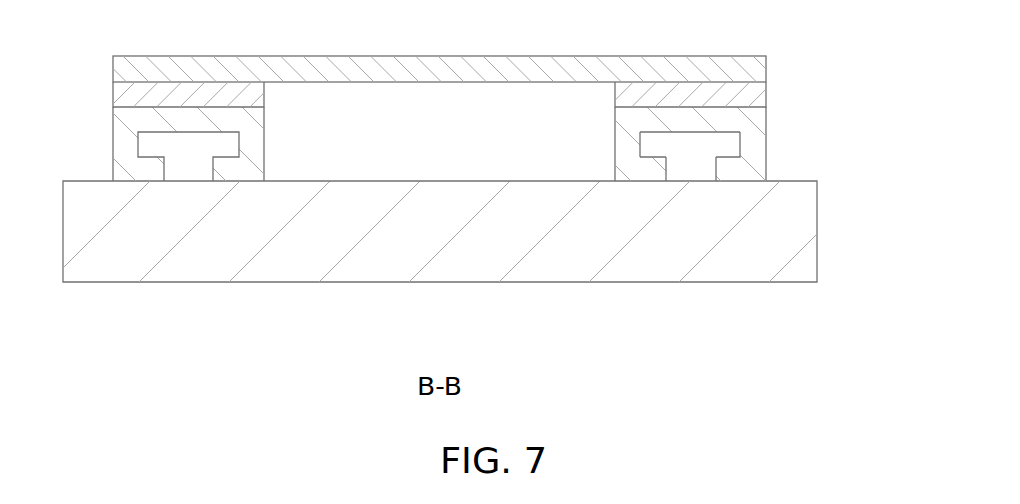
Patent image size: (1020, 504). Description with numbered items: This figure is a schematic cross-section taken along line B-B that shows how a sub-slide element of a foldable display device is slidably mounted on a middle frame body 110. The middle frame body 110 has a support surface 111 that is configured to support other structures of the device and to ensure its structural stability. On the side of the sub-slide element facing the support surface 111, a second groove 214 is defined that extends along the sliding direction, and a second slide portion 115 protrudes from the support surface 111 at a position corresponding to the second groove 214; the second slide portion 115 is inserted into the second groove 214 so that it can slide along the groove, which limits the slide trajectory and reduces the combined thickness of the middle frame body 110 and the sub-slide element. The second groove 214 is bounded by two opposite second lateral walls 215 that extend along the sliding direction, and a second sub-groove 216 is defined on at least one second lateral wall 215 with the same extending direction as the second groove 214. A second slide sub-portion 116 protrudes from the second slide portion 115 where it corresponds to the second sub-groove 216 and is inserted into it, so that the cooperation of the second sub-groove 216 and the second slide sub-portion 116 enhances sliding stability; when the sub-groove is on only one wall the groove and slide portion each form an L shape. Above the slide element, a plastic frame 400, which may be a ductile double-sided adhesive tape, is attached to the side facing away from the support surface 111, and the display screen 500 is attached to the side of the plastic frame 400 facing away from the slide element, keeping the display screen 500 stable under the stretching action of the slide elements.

The middle frame body 110 is at (792, 255).
The support surface 111 is at (433, 183).
The second slide portion 115 is at (700, 170).
The second slide sub-portion 116 is at (725, 147).
The second groove 214 is at (672, 184).
The second lateral wall 215 is at (643, 147).
The second sub-groove 216 is at (655, 152).
The plastic frame 400 is at (743, 98).
The display screen 500 is at (739, 69).